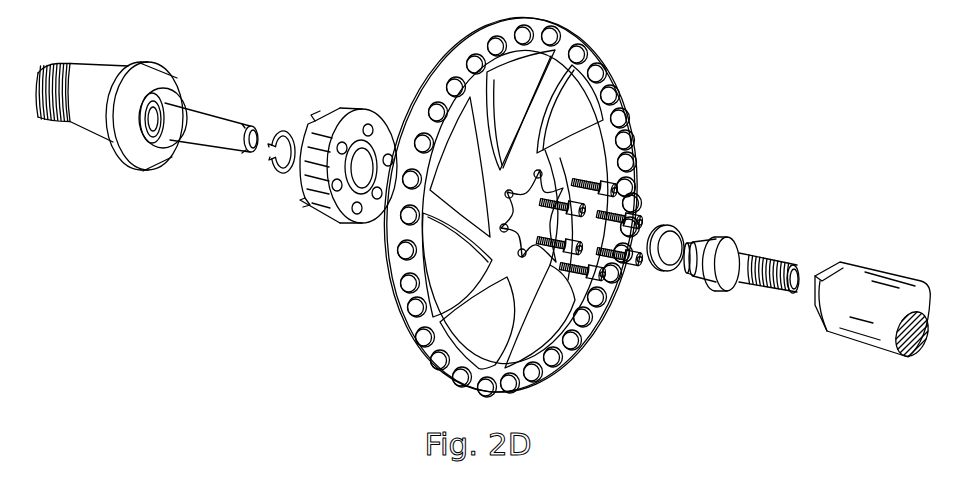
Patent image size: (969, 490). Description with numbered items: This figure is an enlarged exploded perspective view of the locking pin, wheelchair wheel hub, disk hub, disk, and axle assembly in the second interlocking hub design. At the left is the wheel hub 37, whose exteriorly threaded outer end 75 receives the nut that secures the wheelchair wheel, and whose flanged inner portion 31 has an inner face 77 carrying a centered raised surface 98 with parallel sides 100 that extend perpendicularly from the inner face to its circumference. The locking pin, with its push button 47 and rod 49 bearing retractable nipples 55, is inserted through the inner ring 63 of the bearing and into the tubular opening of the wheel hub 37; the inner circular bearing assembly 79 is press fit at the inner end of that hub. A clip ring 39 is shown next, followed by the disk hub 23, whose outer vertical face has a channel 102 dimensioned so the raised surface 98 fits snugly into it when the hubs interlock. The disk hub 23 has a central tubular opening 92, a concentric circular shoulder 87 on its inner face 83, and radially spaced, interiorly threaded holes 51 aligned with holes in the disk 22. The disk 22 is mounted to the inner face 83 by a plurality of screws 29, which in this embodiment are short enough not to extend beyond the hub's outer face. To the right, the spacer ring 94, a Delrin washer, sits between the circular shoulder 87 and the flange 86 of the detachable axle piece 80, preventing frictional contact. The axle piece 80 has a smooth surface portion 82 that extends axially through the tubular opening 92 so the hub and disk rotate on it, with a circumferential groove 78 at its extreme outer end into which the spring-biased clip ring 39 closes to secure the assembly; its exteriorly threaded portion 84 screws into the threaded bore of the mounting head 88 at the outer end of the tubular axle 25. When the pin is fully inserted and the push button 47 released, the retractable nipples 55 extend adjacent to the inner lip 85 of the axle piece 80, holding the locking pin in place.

The disk 22 is at (603, 54).
The disk hub 23 is at (313, 162).
The tubular axle 25 is at (874, 311).
The screws 29 is at (574, 176).
The flanged inner portion 31 is at (162, 61).
The wheel hub 37 is at (93, 135).
The clip ring 39 is at (287, 131).
The push button 47 is at (46, 62).
The rod 49 is at (202, 136).
The holes 51 is at (345, 143).
The retractable nipples 55 is at (243, 124).
The inner ring 63 is at (147, 123).
The exteriorly threaded outer end 75 is at (67, 65).
The inner face 77 is at (152, 166).
The circumferential groove 78 is at (686, 268).
The inner circular bearing assembly 79 is at (185, 100).
The detachable axle piece 80 is at (741, 252).
The smooth surface portion 82 is at (699, 270).
The inner face 83 is at (350, 223).
The exteriorly threaded portion 84 is at (765, 289).
The inner lip 85 is at (800, 273).
The flange 86 is at (738, 238).
The circular shoulder 87 is at (467, 153).
The mounting head 88 is at (814, 299).
The tubular opening 92 is at (363, 187).
The spacer ring 94 is at (666, 226).
The raised surface 98 is at (187, 103).
The parallel sides 100 is at (163, 78).
The channel 102 is at (315, 126).